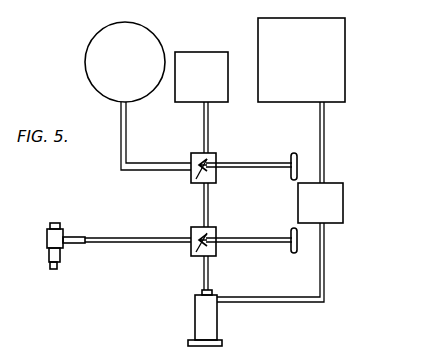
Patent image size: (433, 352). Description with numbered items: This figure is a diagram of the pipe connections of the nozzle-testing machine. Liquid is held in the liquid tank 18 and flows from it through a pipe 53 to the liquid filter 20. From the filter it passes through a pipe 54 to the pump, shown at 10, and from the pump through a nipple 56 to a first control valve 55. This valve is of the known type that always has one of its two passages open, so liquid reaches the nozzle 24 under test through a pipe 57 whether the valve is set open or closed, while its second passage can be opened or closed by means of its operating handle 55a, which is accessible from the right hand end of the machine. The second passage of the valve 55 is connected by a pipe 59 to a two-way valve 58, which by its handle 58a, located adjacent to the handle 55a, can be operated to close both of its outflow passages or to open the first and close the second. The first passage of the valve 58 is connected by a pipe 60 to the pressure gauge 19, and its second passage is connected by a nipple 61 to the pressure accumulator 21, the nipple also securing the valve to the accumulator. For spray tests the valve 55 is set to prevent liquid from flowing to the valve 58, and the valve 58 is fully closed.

The hydraulic cylinder 10 is at (205, 319).
The liquid tank 18 is at (340, 86).
The pressure gauge 19 is at (104, 89).
The liquid filter 20 is at (338, 200).
The pressure accumulator 21 is at (198, 59).
The nozzle 24 is at (47, 241).
The pipe 53 is at (325, 142).
The pipe 54 is at (325, 265).
The first control valve 55 is at (193, 253).
The operating handle 55a is at (295, 254).
The nipple 56 is at (204, 281).
The pipe 57 is at (127, 238).
The two-way valve 58 is at (195, 180).
The handle 58a is at (294, 154).
The pipe 59 is at (204, 208).
The pipe 60 is at (121, 162).
The nipple 61 is at (204, 127).